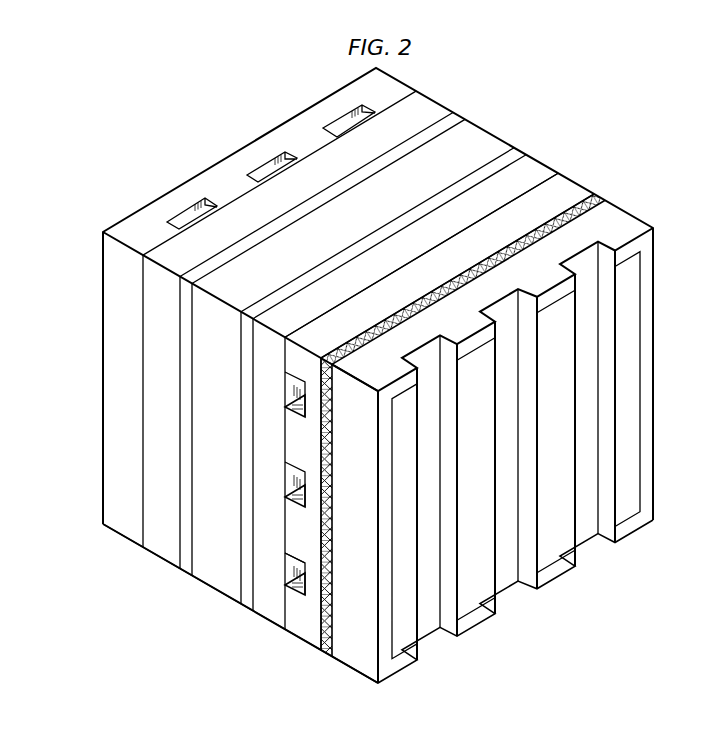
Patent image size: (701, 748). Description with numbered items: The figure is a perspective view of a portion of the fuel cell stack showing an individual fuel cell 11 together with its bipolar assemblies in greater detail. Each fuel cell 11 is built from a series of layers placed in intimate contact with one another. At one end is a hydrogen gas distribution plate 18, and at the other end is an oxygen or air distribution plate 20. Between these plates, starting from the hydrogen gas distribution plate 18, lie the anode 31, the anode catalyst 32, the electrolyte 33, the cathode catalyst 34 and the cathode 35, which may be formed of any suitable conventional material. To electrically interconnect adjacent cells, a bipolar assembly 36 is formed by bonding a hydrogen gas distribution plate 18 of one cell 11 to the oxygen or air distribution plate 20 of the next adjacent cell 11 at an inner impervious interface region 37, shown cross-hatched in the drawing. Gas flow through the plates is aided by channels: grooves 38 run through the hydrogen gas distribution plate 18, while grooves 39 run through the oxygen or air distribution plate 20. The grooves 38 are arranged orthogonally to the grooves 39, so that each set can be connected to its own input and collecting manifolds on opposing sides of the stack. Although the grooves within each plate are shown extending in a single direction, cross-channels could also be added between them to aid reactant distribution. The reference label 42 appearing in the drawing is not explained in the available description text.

The fuel cell 11 is at (96, 318).
The hydrogen gas distribution plate 18 is at (368, 98).
The oxygen or air distribution plate 20 is at (302, 609).
The anode 31 is at (430, 104).
The anode catalyst 32 is at (457, 119).
The electrolyte 33 is at (485, 137).
The cathode catalyst 34 is at (515, 155).
The cathode 35 is at (537, 167).
The bipolar assembly 36 is at (307, 664).
The inner impervious interface region 37 is at (597, 198).
The grooves 38 is at (270, 167).
The grooves 39 is at (296, 483).
The mesh layer 42 is at (572, 188).